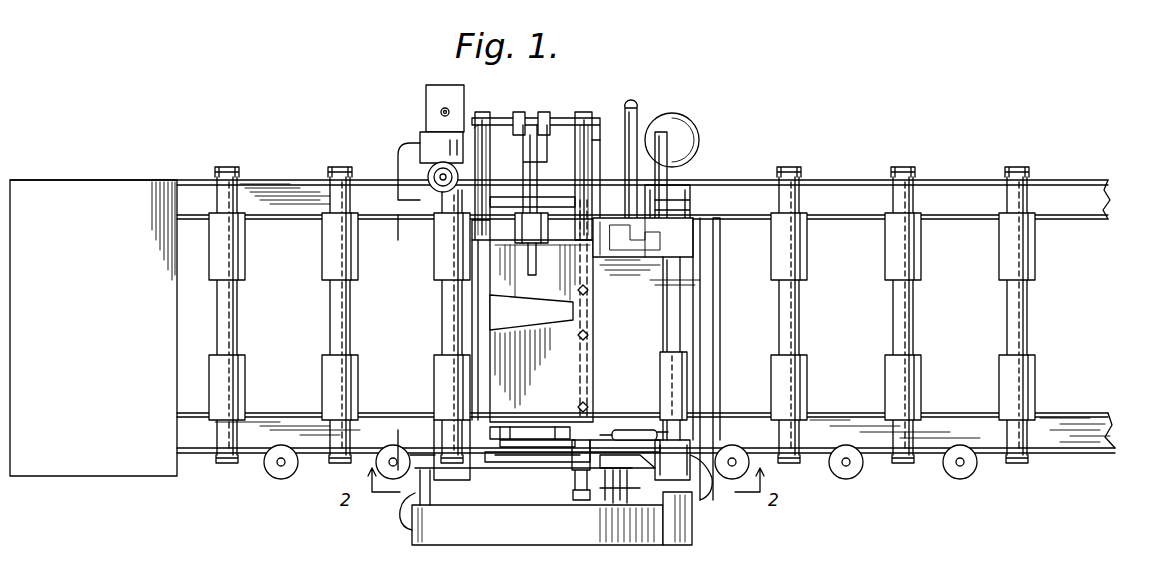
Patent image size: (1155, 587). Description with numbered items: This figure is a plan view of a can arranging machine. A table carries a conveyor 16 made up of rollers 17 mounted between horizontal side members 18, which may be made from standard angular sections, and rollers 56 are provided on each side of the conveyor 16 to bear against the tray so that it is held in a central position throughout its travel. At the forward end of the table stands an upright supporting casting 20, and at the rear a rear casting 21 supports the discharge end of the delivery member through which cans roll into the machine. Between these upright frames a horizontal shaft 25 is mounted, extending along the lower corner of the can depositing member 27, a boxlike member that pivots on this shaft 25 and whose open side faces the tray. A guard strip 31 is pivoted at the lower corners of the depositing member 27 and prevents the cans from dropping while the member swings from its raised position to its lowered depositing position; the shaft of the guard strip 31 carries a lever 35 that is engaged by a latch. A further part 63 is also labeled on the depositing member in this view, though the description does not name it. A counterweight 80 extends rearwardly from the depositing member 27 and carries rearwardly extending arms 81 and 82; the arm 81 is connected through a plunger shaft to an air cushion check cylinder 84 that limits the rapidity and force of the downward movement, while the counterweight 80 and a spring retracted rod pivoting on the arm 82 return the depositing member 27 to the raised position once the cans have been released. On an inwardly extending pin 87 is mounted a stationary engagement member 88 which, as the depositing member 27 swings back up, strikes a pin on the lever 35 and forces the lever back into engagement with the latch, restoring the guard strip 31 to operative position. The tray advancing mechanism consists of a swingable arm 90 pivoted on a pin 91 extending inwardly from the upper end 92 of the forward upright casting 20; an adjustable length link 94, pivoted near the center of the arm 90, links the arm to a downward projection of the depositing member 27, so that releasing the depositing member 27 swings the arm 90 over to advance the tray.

The conveyor 16 is at (945, 193).
The rollers 17 is at (335, 252).
The horizontal side members 18 is at (1053, 183).
The upright supporting casting 20 is at (525, 545).
The rear casting 21 is at (437, 147).
The horizontal shaft 25 is at (590, 350).
The can depositing member 27 is at (547, 380).
The guard strip 31 is at (492, 318).
The lever 35 is at (528, 430).
The rollers 56 is at (846, 470).
The rod 63 is at (517, 260).
The counterweight 80 is at (657, 246).
The arm 81 is at (660, 193).
The arm 82 is at (640, 118).
The air cushion check cylinder 84 is at (685, 130).
The inwardly extending pin 87 is at (578, 457).
The stationary engagement member 88 is at (525, 447).
The swingable arm 90 is at (660, 462).
The pin 91 is at (690, 485).
The upper end 92 is at (690, 532).
The adjustable length link 94 is at (613, 437).